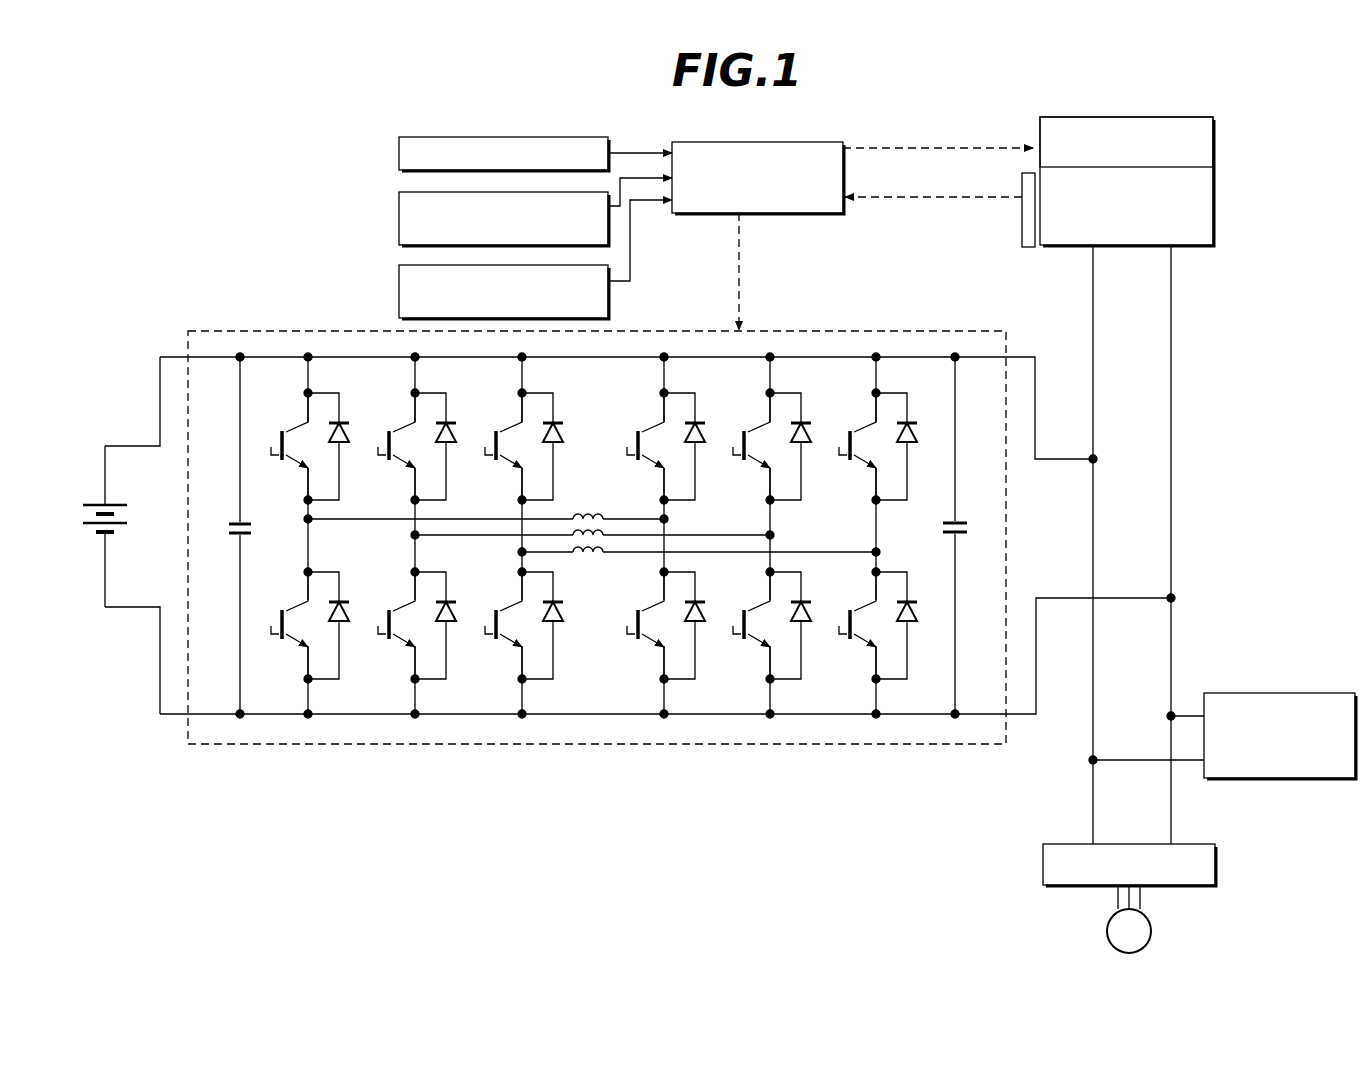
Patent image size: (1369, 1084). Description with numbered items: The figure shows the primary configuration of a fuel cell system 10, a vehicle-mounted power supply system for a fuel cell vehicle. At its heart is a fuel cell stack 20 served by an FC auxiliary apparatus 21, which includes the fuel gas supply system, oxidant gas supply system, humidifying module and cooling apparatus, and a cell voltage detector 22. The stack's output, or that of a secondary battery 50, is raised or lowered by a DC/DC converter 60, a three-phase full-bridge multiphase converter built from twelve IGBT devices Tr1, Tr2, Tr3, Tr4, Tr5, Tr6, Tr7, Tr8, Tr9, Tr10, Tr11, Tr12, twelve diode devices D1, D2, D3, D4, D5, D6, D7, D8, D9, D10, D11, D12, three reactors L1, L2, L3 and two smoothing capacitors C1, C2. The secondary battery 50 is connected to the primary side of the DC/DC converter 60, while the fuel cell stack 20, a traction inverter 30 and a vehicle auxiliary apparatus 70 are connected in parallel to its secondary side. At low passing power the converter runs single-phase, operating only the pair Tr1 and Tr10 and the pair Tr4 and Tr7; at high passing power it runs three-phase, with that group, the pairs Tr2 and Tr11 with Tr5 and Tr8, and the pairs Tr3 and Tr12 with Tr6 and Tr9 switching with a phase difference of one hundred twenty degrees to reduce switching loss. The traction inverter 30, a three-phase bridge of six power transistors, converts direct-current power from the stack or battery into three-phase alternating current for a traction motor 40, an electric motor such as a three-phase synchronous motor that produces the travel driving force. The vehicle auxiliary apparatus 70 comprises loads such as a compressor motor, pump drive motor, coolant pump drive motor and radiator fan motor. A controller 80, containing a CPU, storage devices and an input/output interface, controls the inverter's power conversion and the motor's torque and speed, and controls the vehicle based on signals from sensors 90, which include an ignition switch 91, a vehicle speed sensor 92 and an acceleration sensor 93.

The fuel cell system 10 is at (153, 222).
The fuel cell stack 20 is at (1216, 228).
The FC auxiliary apparatus 21 is at (1216, 157).
The cell voltage detector 22 is at (1022, 228).
The traction inverter 30 is at (1218, 870).
The traction motor 40 is at (1152, 932).
The secondary battery 50 is at (85, 513).
The DC/DC converter 60 is at (566, 745).
The vehicle auxiliary apparatus 70 is at (1278, 693).
The controller 80 is at (712, 213).
The sensors 90 is at (350, 137).
The ignition switch 91 is at (399, 157).
The vehicle speed sensor 92 is at (399, 218).
The acceleration sensor 93 is at (399, 294).
The IGBT device Tr1 is at (286, 446).
The IGBT device Tr2 is at (393, 446).
The IGBT device Tr3 is at (500, 446).
The IGBT device Tr4 is at (642, 446).
The IGBT device Tr5 is at (748, 446).
The IGBT device Tr6 is at (854, 446).
The IGBT device Tr7 is at (286, 625).
The IGBT device Tr8 is at (393, 625).
The IGBT device Tr9 is at (500, 625).
The IGBT device Tr10 is at (637, 625).
The IGBT device Tr11 is at (743, 625).
The IGBT device Tr12 is at (848, 625).
The diode device D1 is at (339, 446).
The diode device D2 is at (446, 446).
The diode device D3 is at (553, 446).
The diode device D4 is at (695, 446).
The diode device D5 is at (801, 446).
The diode device D6 is at (907, 446).
The diode device D7 is at (339, 625).
The diode device D8 is at (446, 625).
The diode device D9 is at (553, 625).
The diode device D10 is at (701, 625).
The diode device D11 is at (807, 625).
The diode device D12 is at (913, 625).
The reactor L1 is at (486, 511).
The reactor L2 is at (592, 527).
The reactor L3 is at (699, 544).
The smoothing capacitor C1 is at (255, 535).
The smoothing capacitor C2 is at (970, 535).